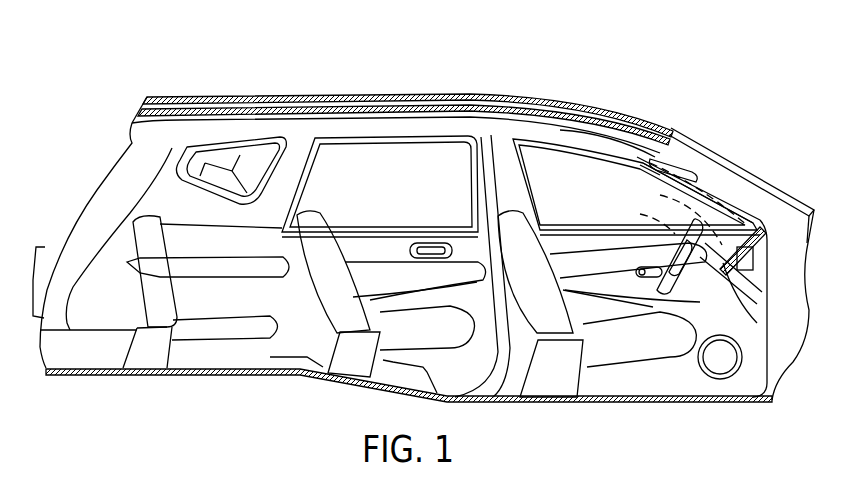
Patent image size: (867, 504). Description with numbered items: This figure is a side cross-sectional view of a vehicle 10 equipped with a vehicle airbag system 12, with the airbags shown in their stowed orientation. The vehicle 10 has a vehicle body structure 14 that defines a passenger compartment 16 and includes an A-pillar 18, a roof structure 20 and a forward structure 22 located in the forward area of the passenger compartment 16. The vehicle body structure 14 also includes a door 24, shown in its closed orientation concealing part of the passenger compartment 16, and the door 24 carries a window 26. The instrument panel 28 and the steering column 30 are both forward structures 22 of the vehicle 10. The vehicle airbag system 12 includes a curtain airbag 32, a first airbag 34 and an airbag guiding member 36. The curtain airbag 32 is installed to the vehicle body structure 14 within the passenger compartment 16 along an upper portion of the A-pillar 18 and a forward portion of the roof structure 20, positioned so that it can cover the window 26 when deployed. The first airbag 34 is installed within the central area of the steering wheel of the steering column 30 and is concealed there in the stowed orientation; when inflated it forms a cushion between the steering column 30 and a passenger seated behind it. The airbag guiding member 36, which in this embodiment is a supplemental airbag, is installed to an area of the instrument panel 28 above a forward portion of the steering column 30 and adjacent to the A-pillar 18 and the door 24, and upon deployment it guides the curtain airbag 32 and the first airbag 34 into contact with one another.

The vehicle 10 is at (495, 55).
The vehicle airbag system 12 is at (596, 176).
The vehicle body structure 14 is at (407, 88).
The passenger compartment 16 is at (366, 170).
The A-pillar 18 is at (720, 180).
The roof structure 20 is at (447, 123).
The forward structure 22 is at (768, 262).
The door 24 is at (605, 290).
The window 26 is at (547, 157).
The instrument panel 28 is at (760, 214).
The steering column 30 is at (655, 292).
The curtain airbag 32 is at (641, 166).
The first airbag 34 is at (641, 214).
The airbag guiding member 36 is at (662, 196).